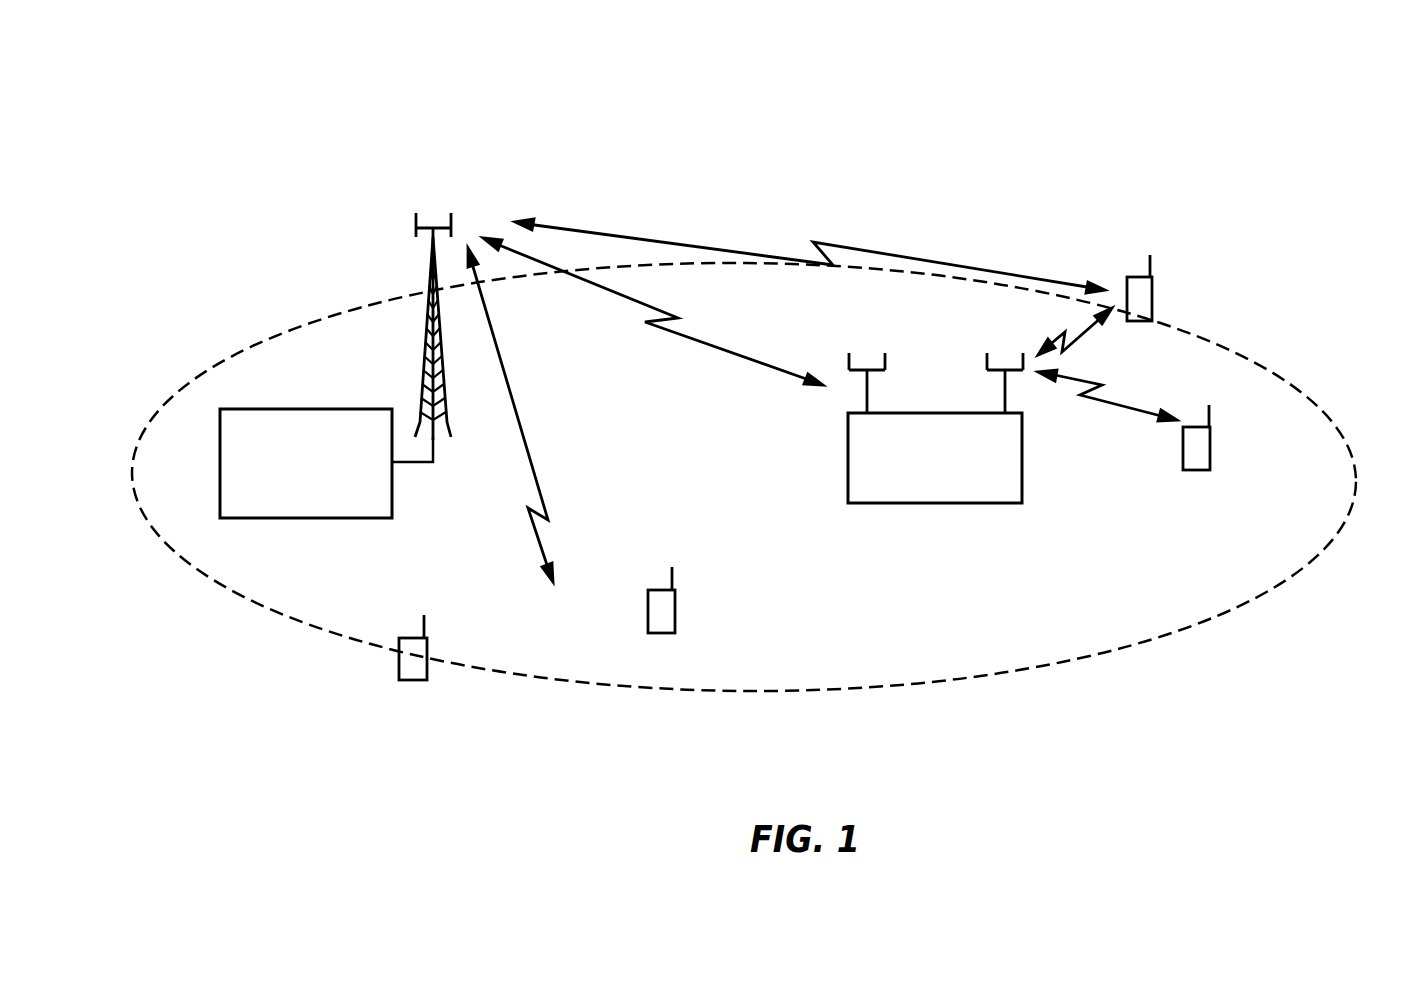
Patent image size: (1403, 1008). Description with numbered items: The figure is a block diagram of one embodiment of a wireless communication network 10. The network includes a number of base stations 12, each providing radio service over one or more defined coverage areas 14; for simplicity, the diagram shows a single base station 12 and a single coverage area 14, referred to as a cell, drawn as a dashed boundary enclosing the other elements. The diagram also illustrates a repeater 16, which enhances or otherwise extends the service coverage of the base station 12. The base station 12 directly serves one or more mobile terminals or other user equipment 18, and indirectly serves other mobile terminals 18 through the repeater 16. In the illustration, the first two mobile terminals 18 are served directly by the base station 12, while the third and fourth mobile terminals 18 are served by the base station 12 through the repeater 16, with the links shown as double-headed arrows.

The wireless communication network 10 is at (343, 125).
The base station 12 is at (335, 365).
The coverage area 14 is at (280, 618).
The repeater 16 is at (935, 428).
The mobile terminals 18 is at (412, 680).